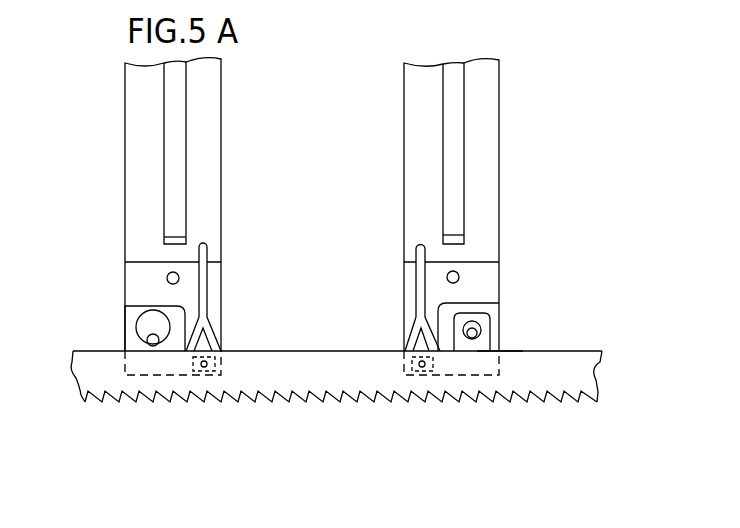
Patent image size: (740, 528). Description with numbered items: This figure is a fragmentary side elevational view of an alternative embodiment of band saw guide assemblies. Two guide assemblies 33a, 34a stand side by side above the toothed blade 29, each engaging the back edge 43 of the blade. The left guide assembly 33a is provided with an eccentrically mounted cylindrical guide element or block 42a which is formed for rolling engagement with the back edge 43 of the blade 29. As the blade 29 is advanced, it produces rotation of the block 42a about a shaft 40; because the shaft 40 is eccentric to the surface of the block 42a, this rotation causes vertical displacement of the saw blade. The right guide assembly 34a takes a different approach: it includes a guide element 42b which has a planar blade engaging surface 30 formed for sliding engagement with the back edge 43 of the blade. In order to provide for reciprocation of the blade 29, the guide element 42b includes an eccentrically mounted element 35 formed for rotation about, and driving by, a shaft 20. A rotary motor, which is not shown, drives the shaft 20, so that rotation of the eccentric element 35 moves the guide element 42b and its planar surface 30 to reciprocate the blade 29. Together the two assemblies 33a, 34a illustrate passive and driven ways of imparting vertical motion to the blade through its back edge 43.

The guide assembly 33a is at (96, 201).
The guide assembly 34a is at (548, 158).
The cylindrical guide element or block 42a is at (140, 316).
The shaft 40 is at (147, 340).
The shaft 20 is at (463, 329).
The guide element 42b is at (490, 313).
The eccentrically mounted element 35 is at (481, 328).
The planar blade engaging surface 30 is at (477, 351).
The back edge 43 is at (277, 351).
The blade 29 is at (336, 390).